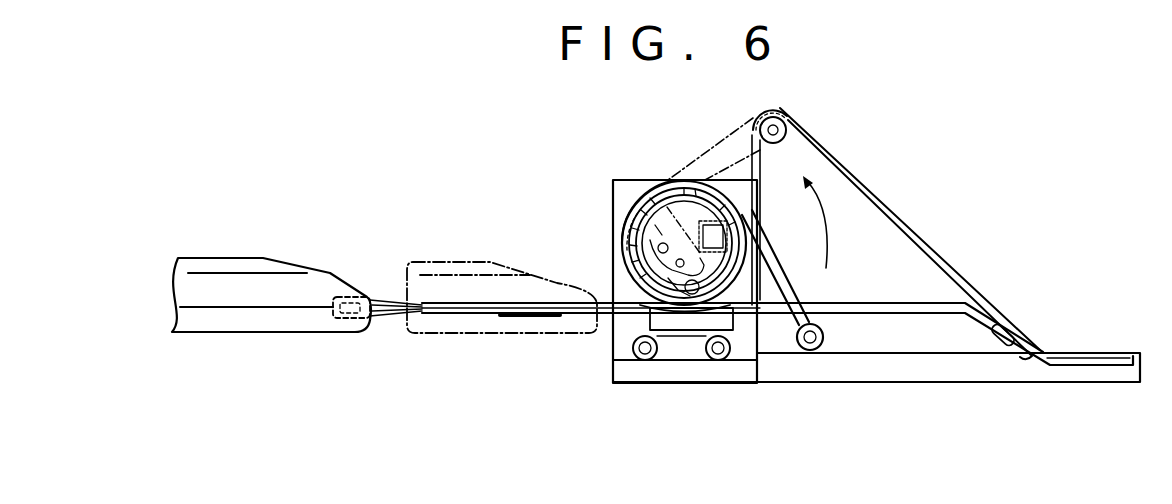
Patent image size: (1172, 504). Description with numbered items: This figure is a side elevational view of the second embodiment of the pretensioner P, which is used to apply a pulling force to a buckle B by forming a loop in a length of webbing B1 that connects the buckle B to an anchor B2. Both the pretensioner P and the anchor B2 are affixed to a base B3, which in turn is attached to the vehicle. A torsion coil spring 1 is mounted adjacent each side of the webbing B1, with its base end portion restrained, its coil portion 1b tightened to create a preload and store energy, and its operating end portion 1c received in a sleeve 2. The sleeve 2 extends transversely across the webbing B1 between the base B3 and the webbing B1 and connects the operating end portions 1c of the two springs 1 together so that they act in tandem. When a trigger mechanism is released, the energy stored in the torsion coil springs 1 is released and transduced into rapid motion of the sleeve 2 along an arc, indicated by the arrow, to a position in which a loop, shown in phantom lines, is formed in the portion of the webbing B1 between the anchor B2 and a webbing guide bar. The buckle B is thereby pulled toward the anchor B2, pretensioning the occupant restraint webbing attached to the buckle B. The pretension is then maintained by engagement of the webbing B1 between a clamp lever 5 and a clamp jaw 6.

The buckle B is at (252, 290).
The webbing B1 is at (562, 283).
The anchor B2 is at (1083, 350).
The base B3 is at (877, 370).
The pretensioner P is at (624, 172).
The torsion coil spring 1 is at (779, 250).
The coil portion 1b is at (613, 246).
The operating end portion 1c is at (812, 352).
The sleeve 2 is at (824, 335).
The clamp lever 5 is at (648, 262).
The clamp jaw 6 is at (640, 335).